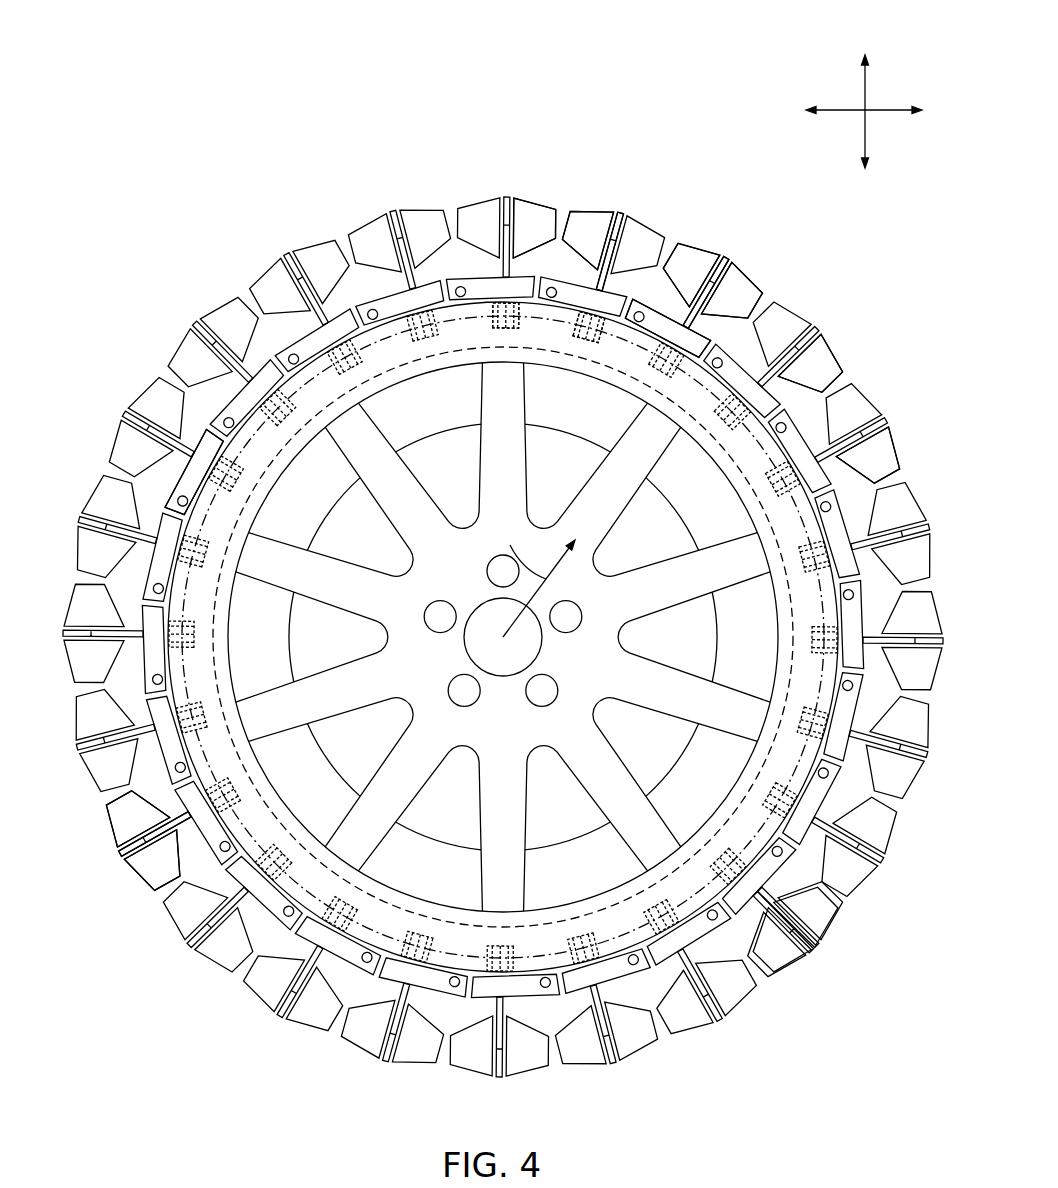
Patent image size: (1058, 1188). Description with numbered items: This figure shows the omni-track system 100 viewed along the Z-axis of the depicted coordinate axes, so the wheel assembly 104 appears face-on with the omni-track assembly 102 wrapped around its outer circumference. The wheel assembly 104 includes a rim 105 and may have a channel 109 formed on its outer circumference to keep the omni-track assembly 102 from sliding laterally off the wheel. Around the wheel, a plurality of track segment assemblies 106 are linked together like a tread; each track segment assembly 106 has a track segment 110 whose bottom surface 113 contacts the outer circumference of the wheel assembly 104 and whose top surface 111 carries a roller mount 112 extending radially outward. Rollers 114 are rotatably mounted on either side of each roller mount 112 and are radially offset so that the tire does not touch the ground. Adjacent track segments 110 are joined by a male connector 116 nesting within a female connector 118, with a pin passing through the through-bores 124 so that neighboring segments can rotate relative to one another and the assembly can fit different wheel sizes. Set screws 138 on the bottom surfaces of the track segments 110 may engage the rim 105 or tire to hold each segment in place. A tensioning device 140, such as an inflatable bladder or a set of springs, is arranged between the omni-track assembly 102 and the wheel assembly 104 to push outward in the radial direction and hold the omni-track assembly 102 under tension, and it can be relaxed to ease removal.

The omni-track system 100 is at (500, 551).
The omni-track assembly 102 is at (523, 180).
The wheel assembly 104 is at (200, 856).
The rim 105 is at (192, 497).
The track segment assembly 106 is at (627, 204).
The channel 109 is at (790, 890).
The track segment 110 is at (597, 294).
The top surface 111 is at (845, 468).
The roller mount 112 is at (637, 258).
The bottom surface 113 is at (780, 447).
The roller 114 is at (641, 222).
The male connector 116 is at (643, 294).
The female connector 118 is at (672, 292).
The through-bores 124 is at (546, 290).
The set screw 138 is at (537, 332).
The tensioning device 140 is at (413, 367).